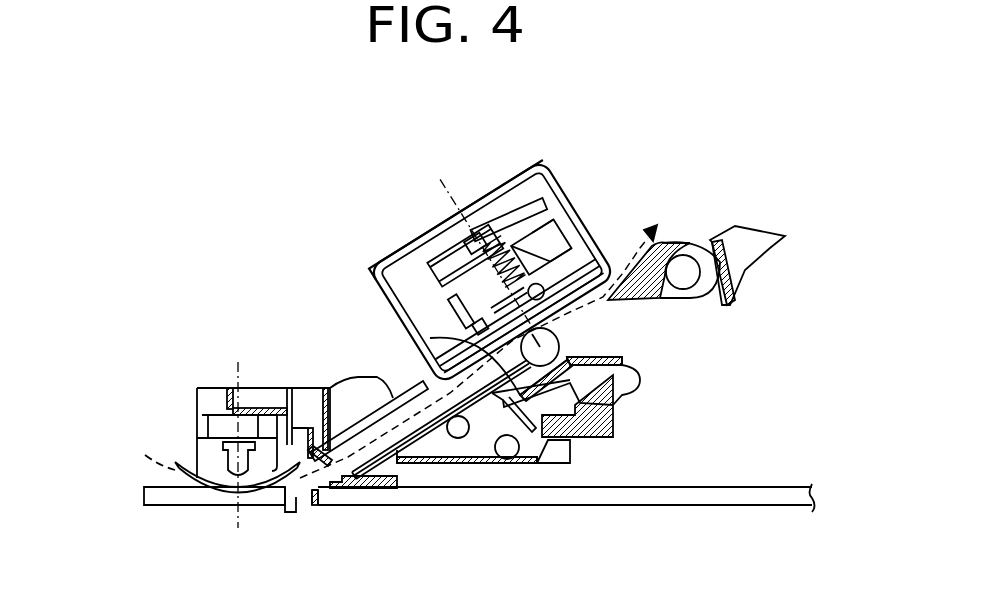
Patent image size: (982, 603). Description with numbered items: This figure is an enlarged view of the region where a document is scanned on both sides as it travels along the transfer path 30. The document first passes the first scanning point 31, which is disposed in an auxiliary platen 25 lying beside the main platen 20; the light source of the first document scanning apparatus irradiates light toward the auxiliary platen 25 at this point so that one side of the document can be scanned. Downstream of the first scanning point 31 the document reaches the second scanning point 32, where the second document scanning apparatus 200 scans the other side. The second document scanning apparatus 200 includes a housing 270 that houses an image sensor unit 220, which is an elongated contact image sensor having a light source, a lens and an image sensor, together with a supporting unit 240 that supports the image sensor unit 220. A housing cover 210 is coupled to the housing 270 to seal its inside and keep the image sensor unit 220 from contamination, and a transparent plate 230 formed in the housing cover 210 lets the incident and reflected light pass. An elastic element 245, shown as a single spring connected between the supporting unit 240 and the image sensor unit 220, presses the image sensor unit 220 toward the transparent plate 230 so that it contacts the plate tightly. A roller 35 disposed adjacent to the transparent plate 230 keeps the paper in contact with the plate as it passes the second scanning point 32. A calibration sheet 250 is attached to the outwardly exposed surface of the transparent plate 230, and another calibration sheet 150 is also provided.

The main platen 20 is at (540, 498).
The auxiliary platen 25 is at (146, 492).
The transfer path 30 is at (152, 456).
The first scanning point 31 is at (236, 487).
The second scanning point 32 is at (540, 325).
The roller 35 is at (556, 344).
The calibration sheet 150 is at (320, 494).
The second document scanning apparatus 200 is at (465, 254).
The housing cover 210 is at (447, 373).
The image sensor unit 220 is at (541, 246).
The transparent plate 230 is at (482, 348).
The supporting unit 240 is at (465, 256).
The elastic element 245 is at (494, 258).
The calibration sheet 250 is at (490, 342).
The housing 270 is at (374, 241).